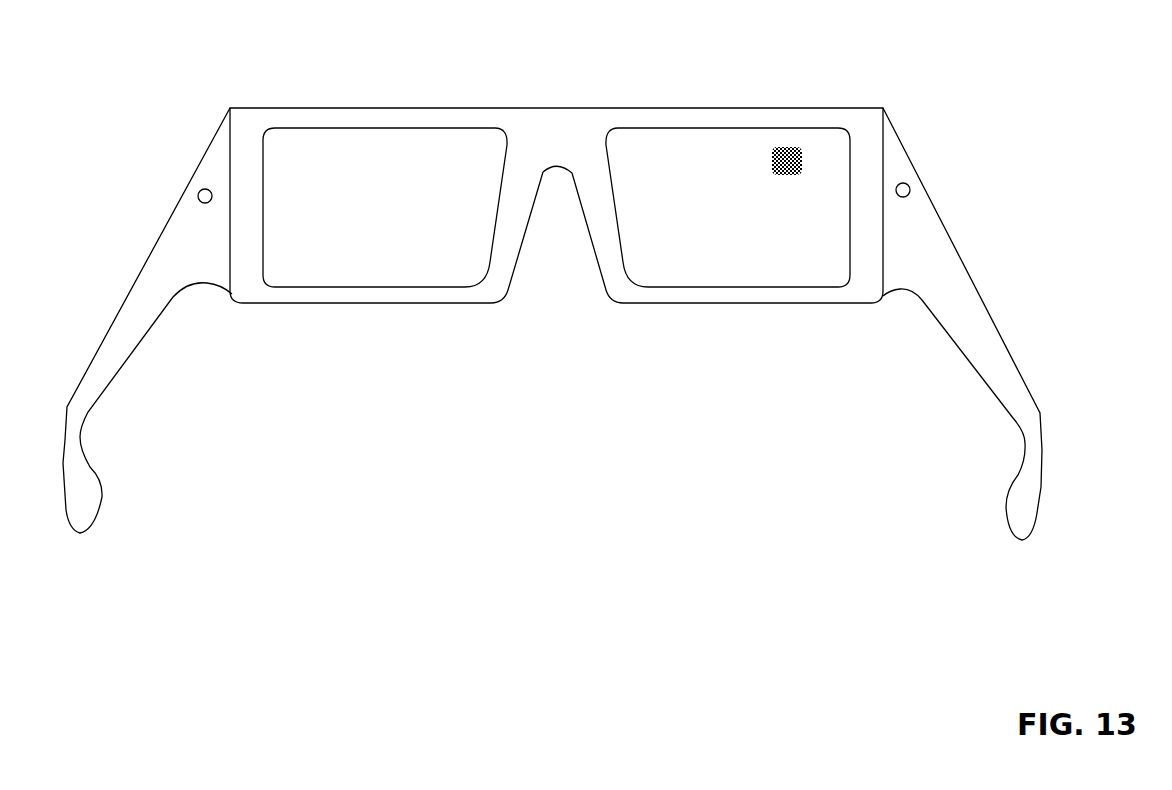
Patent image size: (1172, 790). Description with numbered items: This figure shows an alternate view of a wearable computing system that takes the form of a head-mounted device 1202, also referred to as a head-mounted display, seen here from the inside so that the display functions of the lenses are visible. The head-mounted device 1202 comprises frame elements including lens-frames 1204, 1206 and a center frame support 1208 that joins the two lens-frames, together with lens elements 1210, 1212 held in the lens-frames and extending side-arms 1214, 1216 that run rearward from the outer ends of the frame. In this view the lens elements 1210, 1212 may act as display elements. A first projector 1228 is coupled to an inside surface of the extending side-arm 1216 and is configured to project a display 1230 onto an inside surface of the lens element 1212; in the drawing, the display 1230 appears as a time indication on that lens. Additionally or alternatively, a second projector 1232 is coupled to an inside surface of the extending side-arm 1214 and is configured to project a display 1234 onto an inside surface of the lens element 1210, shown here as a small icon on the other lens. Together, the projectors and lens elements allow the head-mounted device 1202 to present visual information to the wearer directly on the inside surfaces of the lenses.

The head-mounted device 1202 is at (283, 87).
The lens-frame 1204 is at (835, 303).
The lens-frame 1206 is at (292, 303).
The center frame support 1208 is at (553, 108).
The lens element 1210 is at (683, 278).
The lens element 1212 is at (403, 280).
The extending side-arm 1214 is at (950, 240).
The extending side-arm 1216 is at (132, 280).
The first projector 1228 is at (193, 188).
The display 1230 is at (376, 162).
The second projector 1232 is at (903, 183).
The display 1234 is at (774, 165).